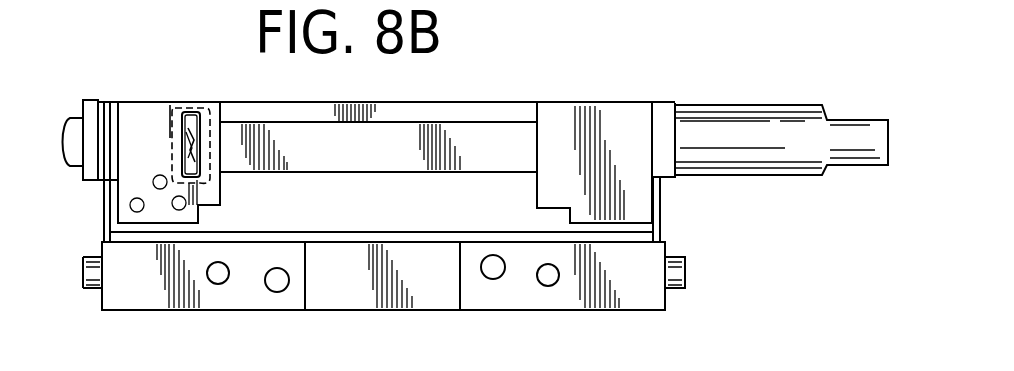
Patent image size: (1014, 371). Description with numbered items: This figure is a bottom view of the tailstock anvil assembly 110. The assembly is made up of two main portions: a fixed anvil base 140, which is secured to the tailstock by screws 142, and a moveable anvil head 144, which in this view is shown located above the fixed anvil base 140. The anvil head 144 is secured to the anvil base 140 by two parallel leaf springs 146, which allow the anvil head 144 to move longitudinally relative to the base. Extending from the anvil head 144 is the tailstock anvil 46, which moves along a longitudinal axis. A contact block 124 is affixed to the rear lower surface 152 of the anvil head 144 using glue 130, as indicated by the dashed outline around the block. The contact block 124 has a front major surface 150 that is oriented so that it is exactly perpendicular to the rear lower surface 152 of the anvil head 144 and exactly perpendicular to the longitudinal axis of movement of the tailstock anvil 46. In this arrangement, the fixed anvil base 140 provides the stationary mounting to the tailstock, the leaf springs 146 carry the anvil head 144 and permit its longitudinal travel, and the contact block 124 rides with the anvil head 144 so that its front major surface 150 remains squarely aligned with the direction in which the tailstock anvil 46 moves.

The tailstock anvil 46 is at (857, 133).
The tailstock anvil assembly 110 is at (718, 241).
The contact block 124 is at (190, 115).
The glue 130 is at (207, 183).
The anvil base 140 is at (365, 287).
The screws 142 is at (217, 277).
The anvil head 144 is at (402, 140).
The leaf springs 146 is at (104, 210).
The front major surface 150 is at (172, 145).
The rear lower surface 152 is at (137, 118).